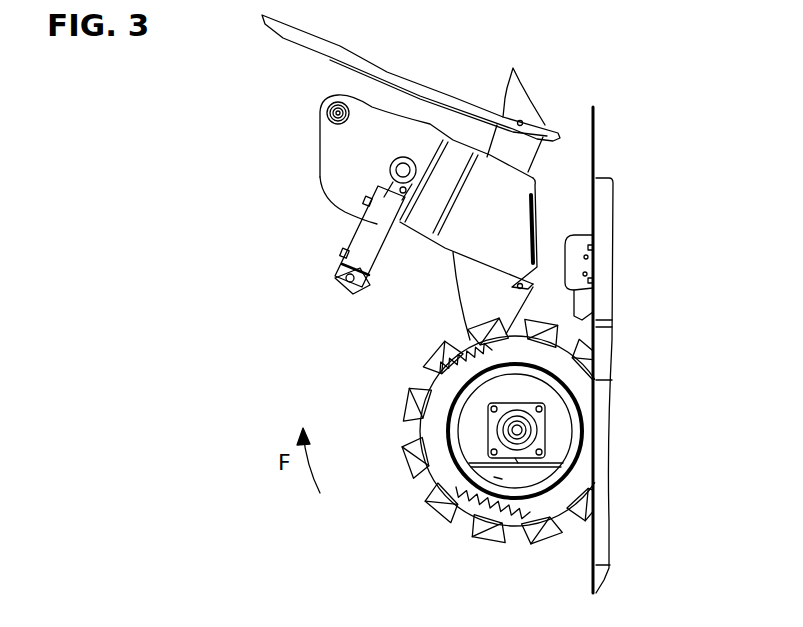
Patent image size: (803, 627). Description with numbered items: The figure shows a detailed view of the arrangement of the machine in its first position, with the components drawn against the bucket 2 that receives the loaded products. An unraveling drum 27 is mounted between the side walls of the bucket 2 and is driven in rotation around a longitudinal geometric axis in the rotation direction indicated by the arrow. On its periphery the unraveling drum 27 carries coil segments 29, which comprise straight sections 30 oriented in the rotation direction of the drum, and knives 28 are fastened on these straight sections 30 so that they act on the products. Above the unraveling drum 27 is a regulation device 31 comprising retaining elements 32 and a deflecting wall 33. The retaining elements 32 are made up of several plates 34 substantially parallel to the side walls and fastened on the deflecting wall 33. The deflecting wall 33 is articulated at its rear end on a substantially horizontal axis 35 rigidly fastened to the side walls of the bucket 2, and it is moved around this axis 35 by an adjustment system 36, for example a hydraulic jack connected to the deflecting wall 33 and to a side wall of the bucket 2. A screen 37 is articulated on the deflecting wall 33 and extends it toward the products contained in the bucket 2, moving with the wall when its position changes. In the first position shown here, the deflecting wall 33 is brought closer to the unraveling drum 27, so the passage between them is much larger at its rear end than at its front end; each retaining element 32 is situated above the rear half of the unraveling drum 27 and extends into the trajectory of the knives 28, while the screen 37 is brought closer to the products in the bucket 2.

The bucket 2 is at (594, 150).
The unraveling drum 27 is at (420, 516).
The knives 28 is at (407, 400).
The coil segments 29 is at (403, 415).
The straight sections 30 is at (450, 488).
The regulation device 31 is at (258, 218).
The retaining elements 32 is at (443, 287).
The deflecting wall 33 is at (328, 152).
The plates 34 is at (475, 300).
The axis 35 is at (328, 113).
The adjustment system 36 is at (366, 233).
The screen 37 is at (442, 92).